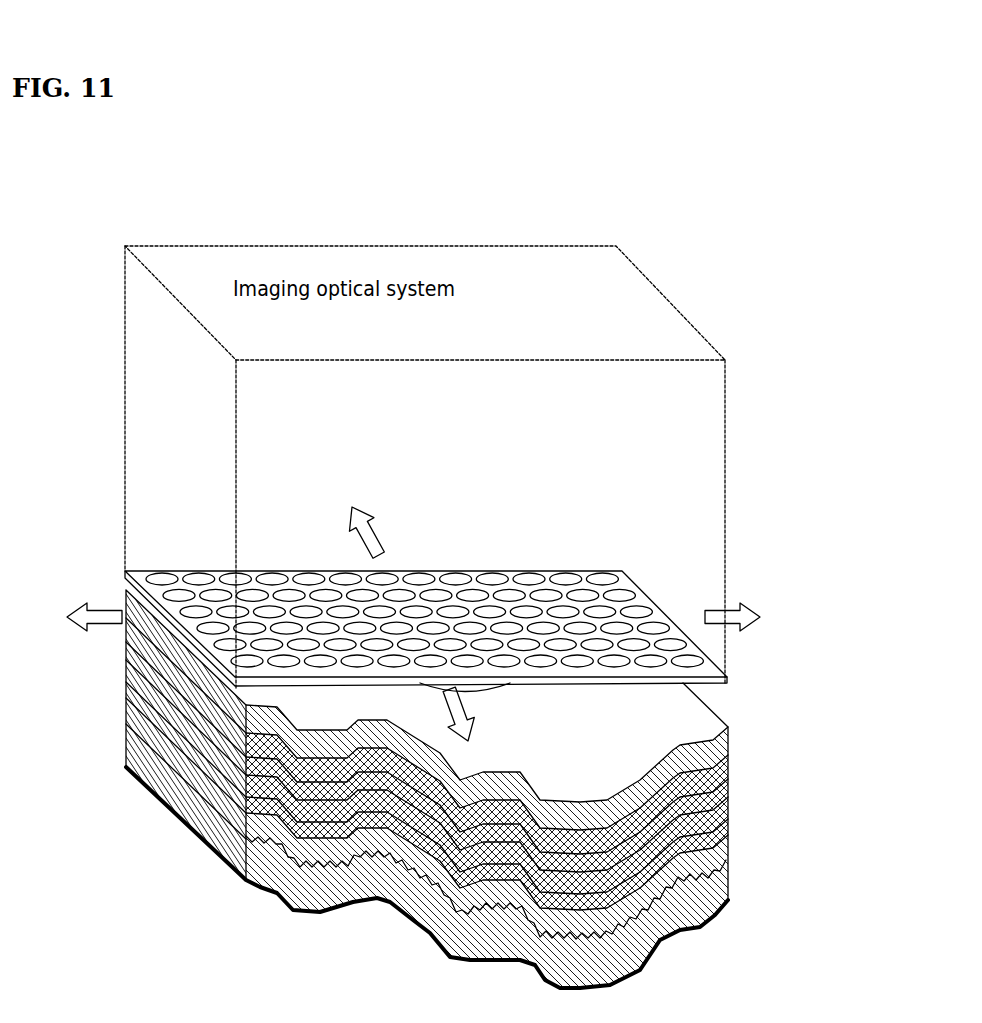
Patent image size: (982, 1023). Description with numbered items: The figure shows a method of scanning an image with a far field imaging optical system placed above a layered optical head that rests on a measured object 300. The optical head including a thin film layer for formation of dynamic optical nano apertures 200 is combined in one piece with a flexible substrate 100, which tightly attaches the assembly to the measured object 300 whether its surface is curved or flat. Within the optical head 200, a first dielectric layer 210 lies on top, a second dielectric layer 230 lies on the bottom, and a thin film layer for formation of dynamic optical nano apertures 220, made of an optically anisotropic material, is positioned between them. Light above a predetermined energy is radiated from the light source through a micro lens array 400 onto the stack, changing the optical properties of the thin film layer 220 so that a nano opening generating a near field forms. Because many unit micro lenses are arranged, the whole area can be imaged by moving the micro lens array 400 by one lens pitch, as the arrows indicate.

The flexible substrate 100 is at (729, 745).
The optical head including a thin film layer for formation of dynamic optical nano a 200 is at (842, 738).
The first dielectric layer 210 is at (729, 758).
The thin film layer for formation of dynamic optical nano apertures 220 is at (729, 778).
The second dielectric layer 230 is at (729, 798).
The measured object 300 is at (730, 818).
The micro lens array 400 is at (650, 605).